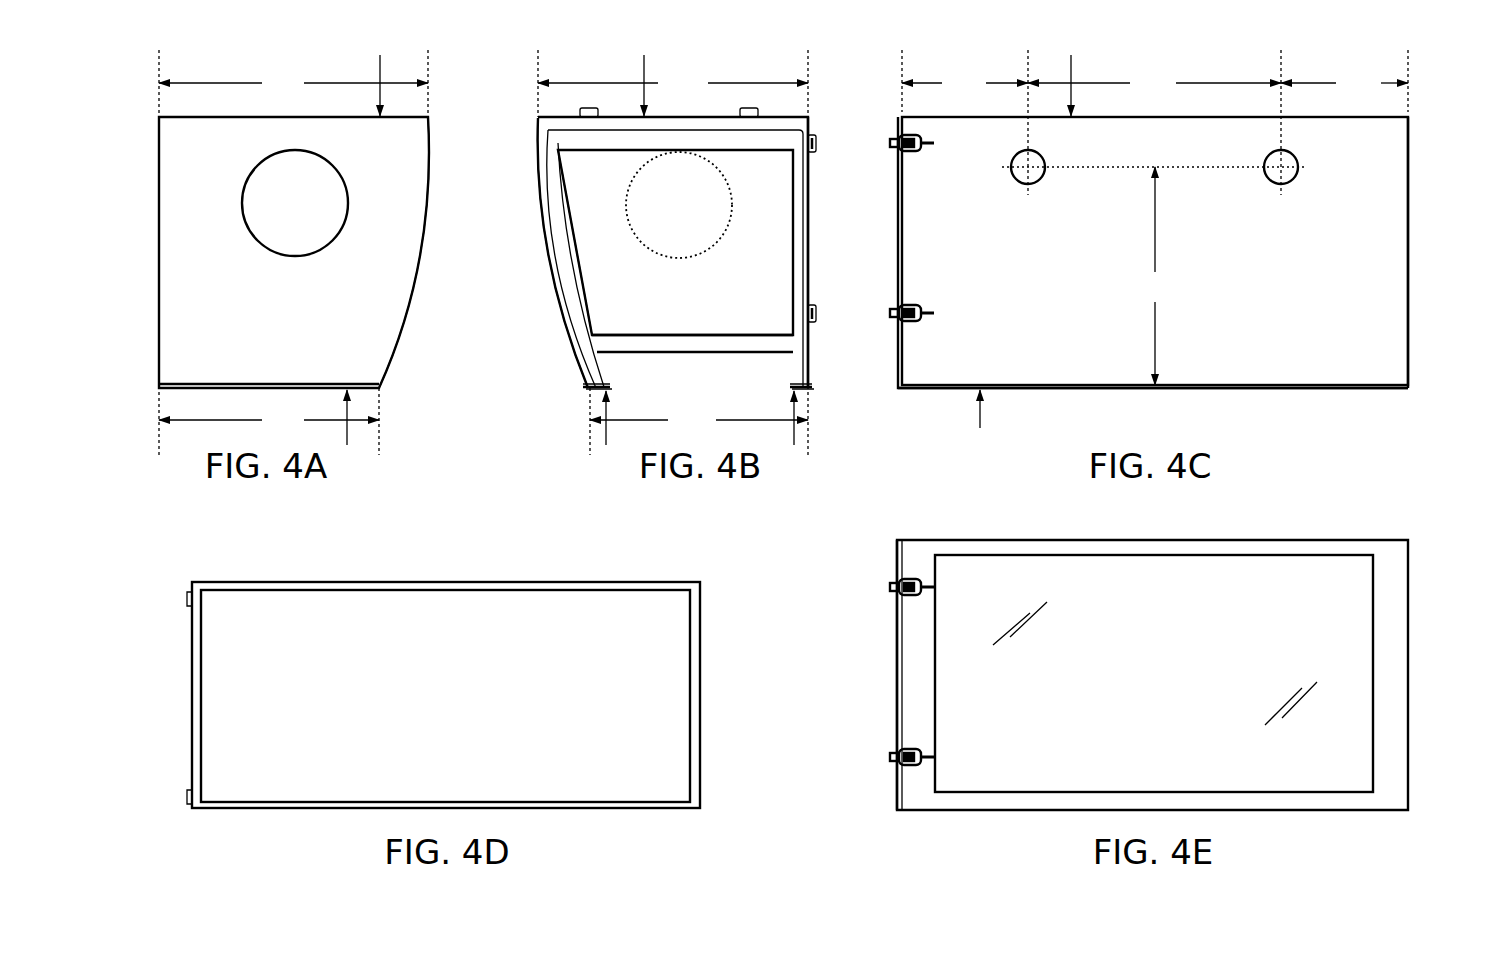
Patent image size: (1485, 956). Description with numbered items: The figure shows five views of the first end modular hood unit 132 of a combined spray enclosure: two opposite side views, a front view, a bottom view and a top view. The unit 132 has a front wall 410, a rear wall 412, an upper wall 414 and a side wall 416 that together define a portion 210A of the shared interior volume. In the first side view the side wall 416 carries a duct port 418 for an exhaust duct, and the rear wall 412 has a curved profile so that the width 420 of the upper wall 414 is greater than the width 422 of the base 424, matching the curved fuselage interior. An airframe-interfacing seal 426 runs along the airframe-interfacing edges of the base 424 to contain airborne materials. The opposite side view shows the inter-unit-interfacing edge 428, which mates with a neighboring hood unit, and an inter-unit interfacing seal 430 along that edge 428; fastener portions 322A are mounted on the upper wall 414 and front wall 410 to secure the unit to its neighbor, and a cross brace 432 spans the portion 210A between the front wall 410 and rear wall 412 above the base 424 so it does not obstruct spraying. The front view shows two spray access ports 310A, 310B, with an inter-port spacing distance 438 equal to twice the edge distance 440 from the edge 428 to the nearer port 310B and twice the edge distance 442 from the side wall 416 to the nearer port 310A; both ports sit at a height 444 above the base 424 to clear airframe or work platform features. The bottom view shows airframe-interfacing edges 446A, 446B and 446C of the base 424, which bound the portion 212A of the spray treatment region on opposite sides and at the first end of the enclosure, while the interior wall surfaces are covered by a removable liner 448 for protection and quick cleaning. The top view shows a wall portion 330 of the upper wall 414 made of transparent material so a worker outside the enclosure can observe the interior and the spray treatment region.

In FIG. 4A, the first end modular hood unit 132 is at (400, 355).
In FIG. 4B, the first end modular hood unit 132 is at (818, 358).
In FIG. 4C, the first end modular hood unit 132 is at (1412, 346).
In FIG. 4D, the first end modular hood unit 132 is at (708, 770).
In FIG. 4E, the first end modular hood unit 132 is at (1412, 770).
In FIG. 4B, the portion of shared interior volume 210A is at (637, 368).
In FIG. 4D, the portion of shared interior volume 210A is at (242, 656).
In FIG. 4D, the portion of spray treatment region 212A is at (426, 700).
In FIG. 4C, the spray access port 310A is at (1275, 172).
In FIG. 4D, the spray access port 310A is at (572, 605).
In FIG. 4C, the spray access port 310B is at (1022, 172).
In FIG. 4D, the spray access port 310B is at (319, 605).
In FIG. 4B, the fastener portion 322A is at (586, 106).
In FIG. 4C, the fastener portion 322A is at (903, 148).
In FIG. 4E, the fastener portion 322A is at (900, 596).
In FIG. 4E, the wall portion 330 is at (958, 575).
In FIG. 4A, the front wall 410 is at (157, 270).
In FIG. 4B, the front wall 410 is at (811, 270).
In FIG. 4C, the front wall 410 is at (1373, 203).
In FIG. 4D, the front wall 410 is at (460, 581).
In FIG. 4E, the front wall 410 is at (1045, 812).
In FIG. 4A, the rear wall 412 is at (412, 252).
In FIG. 4B, the rear wall 412 is at (555, 255).
In FIG. 4D, the rear wall 412 is at (300, 810).
In FIG. 4E, the rear wall 412 is at (1045, 538).
In FIG. 4A, the upper wall 414 is at (380, 74).
In FIG. 4B, the upper wall 414 is at (644, 74).
In FIG. 4C, the upper wall 414 is at (1071, 74).
In FIG. 4E, the upper wall 414 is at (920, 793).
In FIG. 4A, the side wall 416 is at (212, 252).
In FIG. 4B, the side wall 416 is at (675, 242).
In FIG. 4C, the side wall 416 is at (1410, 228).
In FIG. 4D, the side wall 416 is at (702, 618).
In FIG. 4E, the side wall 416 is at (1410, 675).
In FIG. 4A, the duct port 418 is at (266, 203).
In FIG. 4B, the duct port 418 is at (664, 228).
In FIG. 4D, the duct port 418 is at (678, 692).
In FIG. 4A, the width of upper wall 420 is at (293, 252).
In FIG. 4B, the width of upper wall 420 is at (673, 252).
In FIG. 4A, the width of base 422 is at (269, 421).
In FIG. 4B, the width of base 422 is at (699, 421).
In FIG. 4A, the base 424 is at (347, 427).
In FIG. 4B, the base 424 is at (695, 428).
In FIG. 4C, the base 424 is at (980, 416).
In FIG. 4D, the base 424 is at (417, 588).
In FIG. 4A, the airframe-interfacing seal 426 is at (183, 385).
In FIG. 4B, the airframe-interfacing seal 426 is at (588, 389).
In FIG. 4C, the airframe-interfacing seal 426 is at (905, 388).
In FIG. 4D, the airframe-interfacing seal 426 is at (380, 696).
In FIG. 4B, the inter-unit-interfacing edge 428 is at (563, 143).
In FIG. 4C, the inter-unit-interfacing edge 428 is at (897, 233).
In FIG. 4D, the inter-unit-interfacing edge 428 is at (190, 600).
In FIG. 4E, the inter-unit-interfacing edge 428 is at (896, 672).
In FIG. 4B, the inter-unit interfacing seal 430 is at (552, 178).
In FIG. 4C, the inter-unit interfacing seal 430 is at (897, 218).
In FIG. 4D, the inter-unit interfacing seal 430 is at (188, 592).
In FIG. 4E, the inter-unit interfacing seal 430 is at (897, 718).
In FIG. 4B, the cross brace 432 is at (683, 338).
In FIG. 4D, the cross brace 432 is at (200, 721).
In FIG. 4C, the inter-port spacing distance 438 is at (1154, 83).
In FIG. 4C, the edge distance 440 is at (965, 83).
In FIG. 4C, the edge distance 442 is at (1344, 83).
In FIG. 4C, the height 444 is at (1155, 276).
In FIG. 4D, the airframe-interfacing edge 446A is at (504, 582).
In FIG. 4D, the airframe-interfacing edge 446B is at (504, 803).
In FIG. 4D, the airframe-interfacing edge 446C is at (700, 758).
In FIG. 4D, the liner 448 is at (204, 598).